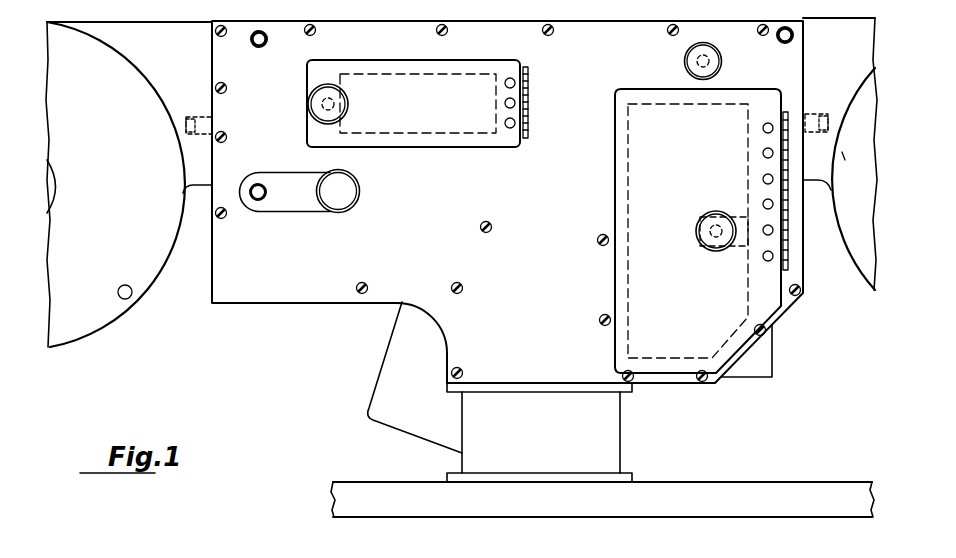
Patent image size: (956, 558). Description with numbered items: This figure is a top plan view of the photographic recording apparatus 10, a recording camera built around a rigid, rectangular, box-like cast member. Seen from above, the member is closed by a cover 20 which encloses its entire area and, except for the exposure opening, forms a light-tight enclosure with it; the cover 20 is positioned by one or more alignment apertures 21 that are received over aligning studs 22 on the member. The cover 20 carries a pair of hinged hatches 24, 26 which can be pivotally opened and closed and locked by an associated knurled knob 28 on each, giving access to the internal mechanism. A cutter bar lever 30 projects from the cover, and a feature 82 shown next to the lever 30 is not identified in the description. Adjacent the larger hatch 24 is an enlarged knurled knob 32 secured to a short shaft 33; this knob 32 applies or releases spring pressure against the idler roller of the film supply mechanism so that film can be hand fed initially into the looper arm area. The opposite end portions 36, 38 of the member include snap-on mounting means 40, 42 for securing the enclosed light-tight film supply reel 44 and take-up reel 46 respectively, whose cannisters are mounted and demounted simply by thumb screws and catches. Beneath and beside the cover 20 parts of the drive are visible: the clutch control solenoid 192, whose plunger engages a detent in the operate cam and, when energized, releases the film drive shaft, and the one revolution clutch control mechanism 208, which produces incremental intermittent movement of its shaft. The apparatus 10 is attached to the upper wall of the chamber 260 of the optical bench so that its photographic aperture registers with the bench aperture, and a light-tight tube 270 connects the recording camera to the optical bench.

The photographic recording apparatus 10 is at (320, 339).
The cover 20 is at (529, 237).
The alignment apertures 21 is at (264, 47).
The aligning studs 22 is at (253, 47).
The hinged hatch 24 is at (621, 183).
The hinged hatch 26 is at (447, 144).
The knurled knob 28 is at (310, 108).
The cutter bar lever 30 is at (308, 209).
The enlarged knurled knob 32 is at (688, 68).
The short shaft 33 is at (690, 57).
The end portion 36 is at (805, 54).
The end portion 38 is at (212, 60).
The snap-on mounting means 40 is at (814, 113).
The snap-on mounting means 42 is at (190, 113).
The film supply reel 44 is at (860, 266).
The take-up reel 46 is at (143, 283).
The pivot hole 82 is at (257, 204).
The clutch control solenoid 192 is at (770, 377).
The one revolution clutch control mechanism 208 is at (372, 388).
The chamber 260 is at (350, 486).
The light-tight tube 270 is at (620, 434).